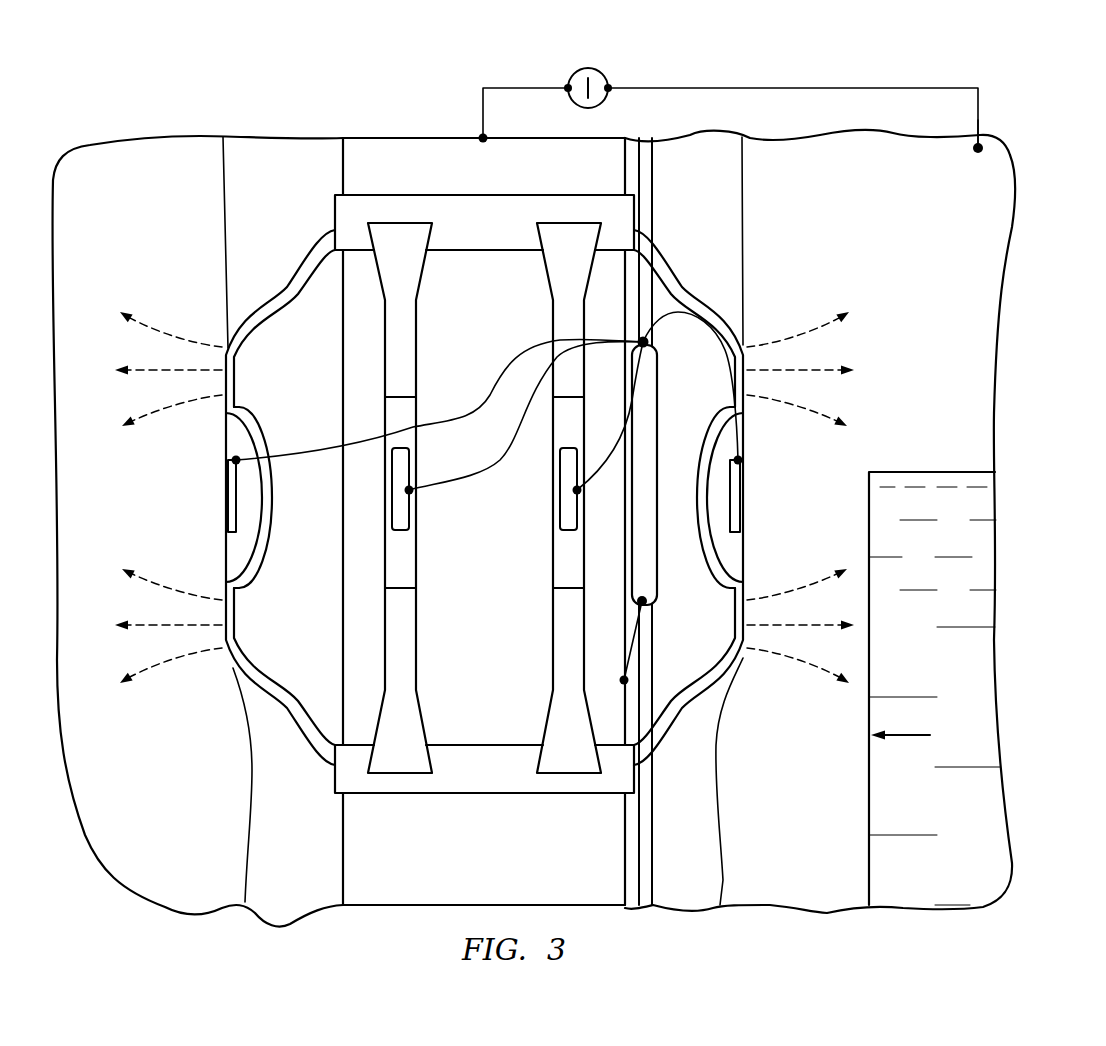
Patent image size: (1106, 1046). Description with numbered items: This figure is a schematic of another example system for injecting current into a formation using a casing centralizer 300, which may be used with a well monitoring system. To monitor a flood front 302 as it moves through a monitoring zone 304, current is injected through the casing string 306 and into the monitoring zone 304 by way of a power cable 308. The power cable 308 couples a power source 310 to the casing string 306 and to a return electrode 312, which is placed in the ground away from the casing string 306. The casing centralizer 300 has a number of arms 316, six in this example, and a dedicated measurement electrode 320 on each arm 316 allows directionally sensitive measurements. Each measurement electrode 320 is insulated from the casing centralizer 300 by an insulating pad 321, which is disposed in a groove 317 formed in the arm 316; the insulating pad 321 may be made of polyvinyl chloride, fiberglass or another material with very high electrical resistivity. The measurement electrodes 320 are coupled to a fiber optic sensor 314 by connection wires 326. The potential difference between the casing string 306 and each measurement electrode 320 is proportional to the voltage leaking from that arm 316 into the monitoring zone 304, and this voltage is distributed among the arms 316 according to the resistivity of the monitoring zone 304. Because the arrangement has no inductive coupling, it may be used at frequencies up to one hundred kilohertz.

The casing centralizer 300 is at (640, 199).
The flood front 302 is at (970, 472).
The monitoring zone 304 is at (925, 325).
The casing string 306 is at (342, 158).
The power cable 308 is at (482, 103).
The power source 310 is at (603, 72).
The return electrode 312 is at (980, 147).
The fiber optic sensor 314 is at (658, 433).
The arm 316 is at (307, 265).
The groove 317 is at (385, 418).
The measurement electrode 320 is at (228, 506).
The insulating pad 321 is at (233, 440).
The connection wire 326 is at (630, 295).